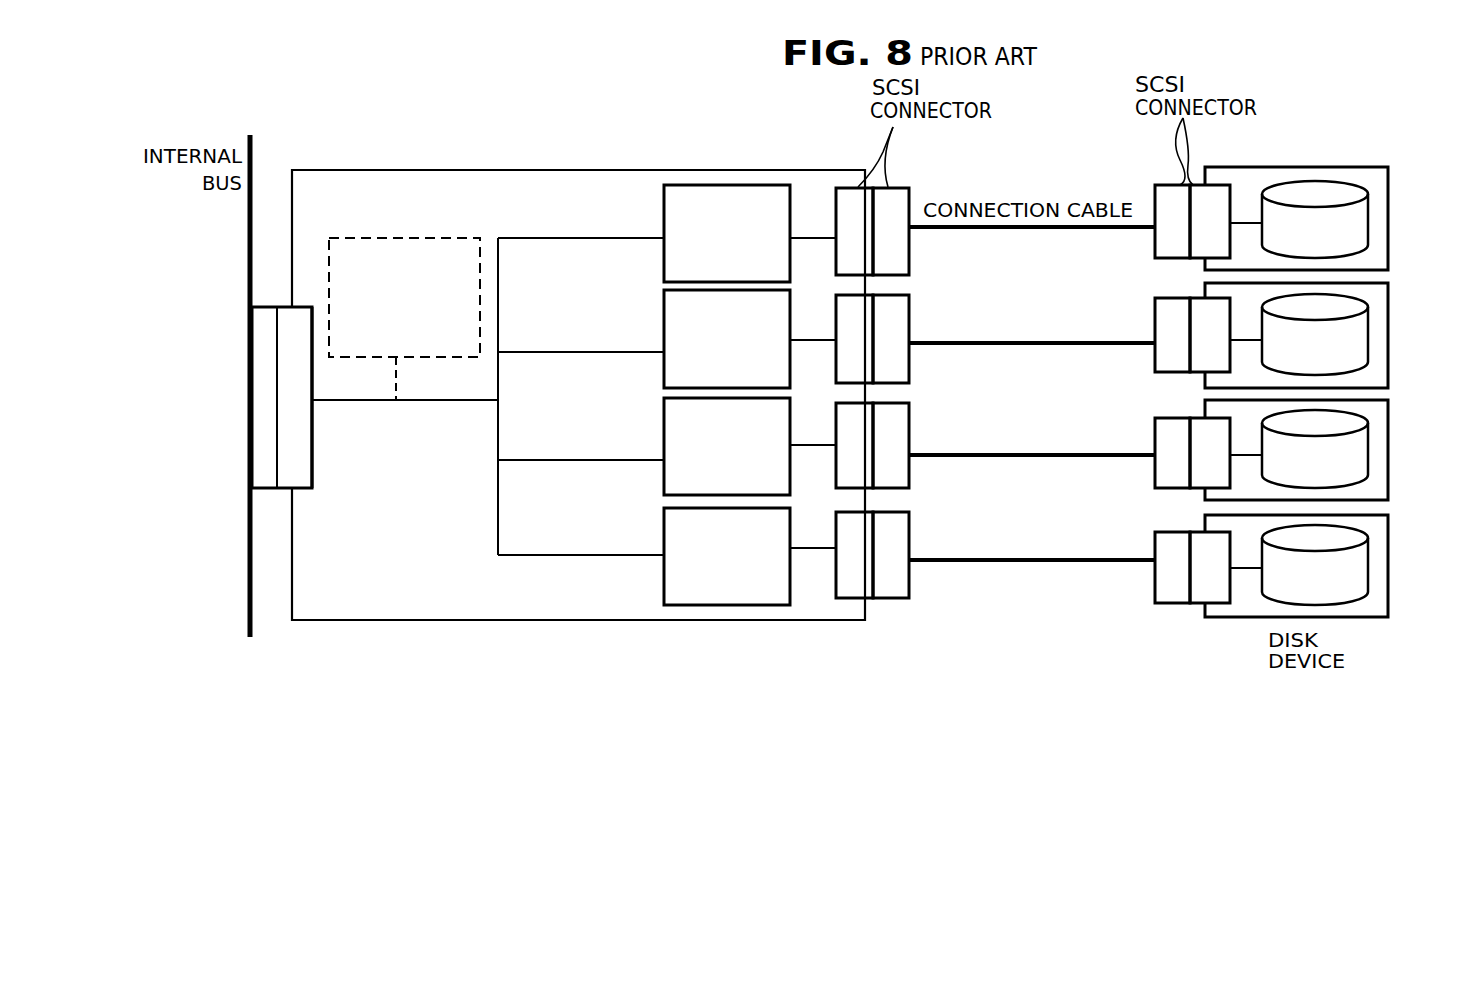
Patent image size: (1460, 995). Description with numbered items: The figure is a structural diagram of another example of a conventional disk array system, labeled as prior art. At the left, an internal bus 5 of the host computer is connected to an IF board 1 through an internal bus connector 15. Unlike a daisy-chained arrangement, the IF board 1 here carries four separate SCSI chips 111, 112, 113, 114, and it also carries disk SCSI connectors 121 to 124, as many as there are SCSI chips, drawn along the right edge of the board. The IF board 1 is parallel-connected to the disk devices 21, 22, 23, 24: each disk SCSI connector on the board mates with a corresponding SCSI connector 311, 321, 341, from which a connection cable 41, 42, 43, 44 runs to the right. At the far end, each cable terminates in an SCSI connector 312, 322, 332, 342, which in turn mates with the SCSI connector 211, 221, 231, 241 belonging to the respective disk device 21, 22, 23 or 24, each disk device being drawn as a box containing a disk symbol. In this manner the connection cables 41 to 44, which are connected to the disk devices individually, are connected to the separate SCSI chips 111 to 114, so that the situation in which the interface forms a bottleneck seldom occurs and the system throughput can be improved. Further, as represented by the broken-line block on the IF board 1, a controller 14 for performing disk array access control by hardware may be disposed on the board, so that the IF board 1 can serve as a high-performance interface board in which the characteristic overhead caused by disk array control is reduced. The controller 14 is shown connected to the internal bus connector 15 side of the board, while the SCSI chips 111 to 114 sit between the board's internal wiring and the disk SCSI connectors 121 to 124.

The IF board 1 is at (657, 622).
The internal bus 5 is at (247, 587).
The controller 14 is at (367, 238).
The internal bus connector 15 is at (303, 490).
The SCSI chip 111 is at (664, 207).
The SCSI chip 112 is at (664, 318).
The SCSI chip 113 is at (664, 430).
The SCSI chip 114 is at (664, 535).
The disk SCSI connector 121 is at (847, 187).
The disk SCSI connector 124 is at (848, 600).
The SCSI connector 311 is at (905, 187).
The SCSI connector 321 is at (909, 327).
The SCSI connector 341 is at (896, 600).
The connection cable 41 is at (1045, 229).
The connection cable 42 is at (1047, 345).
The connection cable 43 is at (1047, 457).
The connection cable 44 is at (1047, 562).
The SCSI connector 312 is at (1168, 185).
The SCSI connector 322 is at (1155, 330).
The SCSI connector 332 is at (1155, 432).
The SCSI connector 342 is at (1153, 597).
The SCSI connector 211 is at (1222, 185).
The SCSI connector 221 is at (1198, 298).
The SCSI connector 231 is at (1198, 418).
The SCSI connector 241 is at (1212, 603).
The disk device 21 is at (1388, 205).
The disk device 22 is at (1388, 375).
The disk device 23 is at (1388, 482).
The disk device 24 is at (1388, 598).